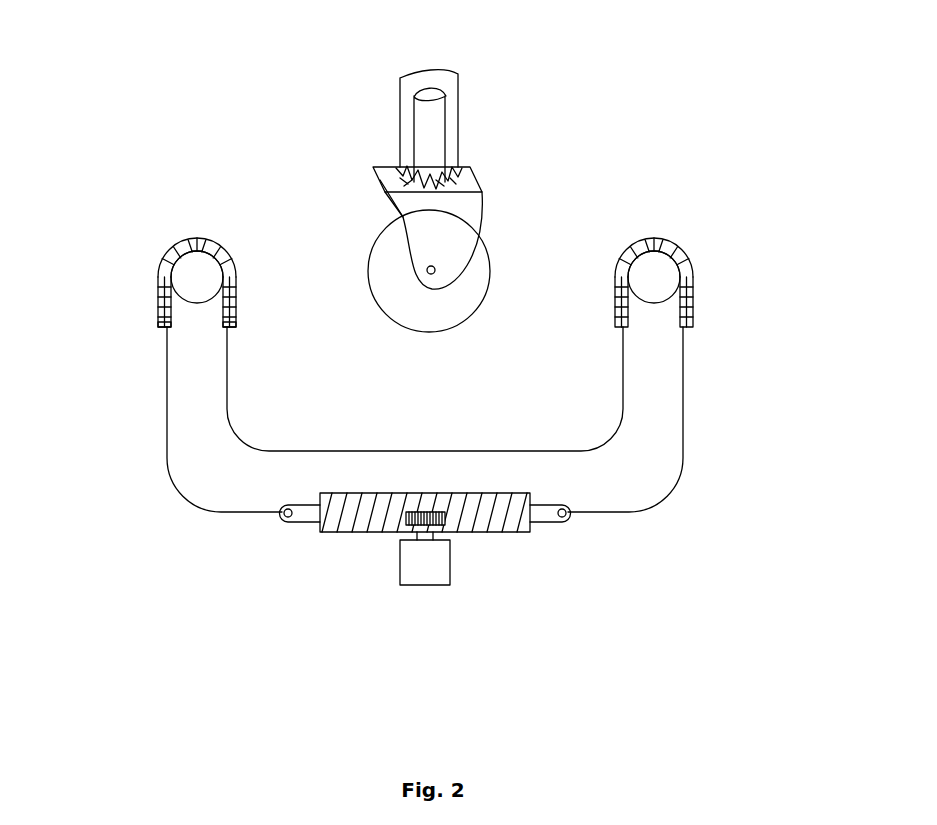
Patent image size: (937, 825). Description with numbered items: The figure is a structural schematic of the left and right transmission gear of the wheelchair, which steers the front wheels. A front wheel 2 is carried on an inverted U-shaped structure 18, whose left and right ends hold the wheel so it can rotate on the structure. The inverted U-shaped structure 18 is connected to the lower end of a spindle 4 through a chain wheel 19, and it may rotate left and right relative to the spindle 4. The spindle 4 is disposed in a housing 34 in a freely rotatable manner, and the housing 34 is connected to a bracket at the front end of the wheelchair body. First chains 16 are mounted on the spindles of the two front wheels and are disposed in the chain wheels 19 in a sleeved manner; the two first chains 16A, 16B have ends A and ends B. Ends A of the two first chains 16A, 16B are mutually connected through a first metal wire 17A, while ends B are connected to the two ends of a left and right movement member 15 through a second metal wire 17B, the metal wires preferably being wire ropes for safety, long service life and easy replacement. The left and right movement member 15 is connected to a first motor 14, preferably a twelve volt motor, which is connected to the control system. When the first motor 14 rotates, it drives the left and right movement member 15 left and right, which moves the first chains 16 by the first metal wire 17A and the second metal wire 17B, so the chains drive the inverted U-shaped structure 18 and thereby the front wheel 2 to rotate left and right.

The front wheel 2 is at (390, 262).
The spindle 4 is at (430, 122).
The first motor 14 is at (422, 578).
The left and right movement member 15 is at (490, 527).
The first chains 16 is at (165, 262).
The first chain 16A is at (232, 325).
The first chain 16B is at (160, 328).
The first metal wire 17A is at (620, 403).
The second metal wire 17B is at (647, 508).
The inverted U-shaped structure 18 is at (457, 225).
The chain wheel 19 is at (456, 168).
The housing 34 is at (400, 100).